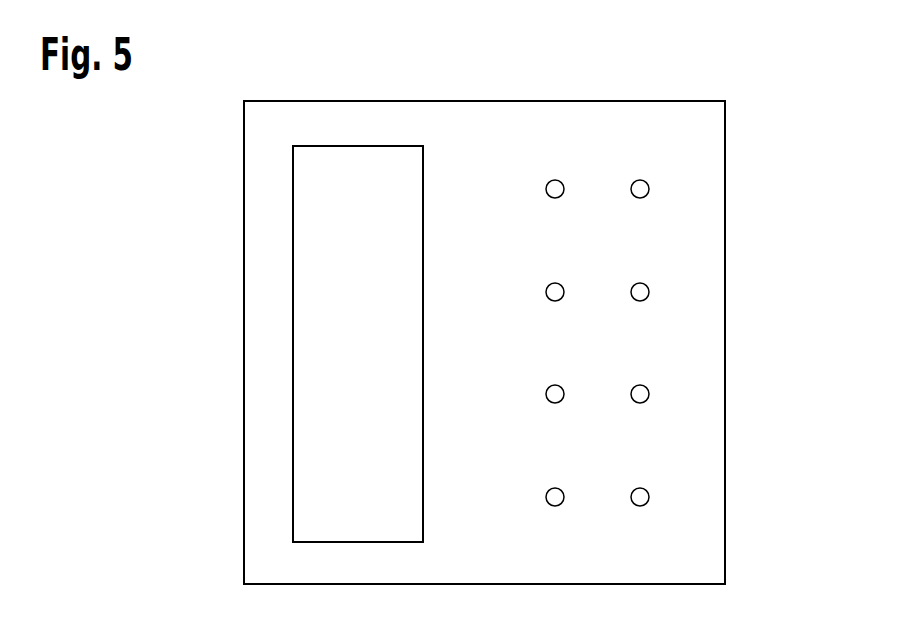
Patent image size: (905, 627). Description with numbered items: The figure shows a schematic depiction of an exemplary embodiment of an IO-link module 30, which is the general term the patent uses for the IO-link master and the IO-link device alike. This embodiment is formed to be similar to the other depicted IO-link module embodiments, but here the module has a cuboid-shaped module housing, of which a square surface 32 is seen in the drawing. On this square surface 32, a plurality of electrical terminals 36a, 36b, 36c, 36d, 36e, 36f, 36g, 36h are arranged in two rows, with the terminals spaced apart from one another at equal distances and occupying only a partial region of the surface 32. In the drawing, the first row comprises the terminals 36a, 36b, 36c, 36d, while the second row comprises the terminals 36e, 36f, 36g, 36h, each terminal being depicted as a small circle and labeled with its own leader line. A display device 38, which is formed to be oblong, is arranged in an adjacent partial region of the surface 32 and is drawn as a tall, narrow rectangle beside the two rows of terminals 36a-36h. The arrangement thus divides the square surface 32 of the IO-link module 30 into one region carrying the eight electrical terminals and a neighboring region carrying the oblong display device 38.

The IO-link module 30 is at (153, 155).
The square surface 32 is at (663, 536).
The electrical terminal 36a is at (558, 181).
The electrical terminal 36b is at (558, 284).
The electrical terminal 36c is at (558, 386).
The electrical terminal 36d is at (558, 489).
The electrical terminal 36e is at (643, 181).
The electrical terminal 36f is at (643, 284).
The electrical terminal 36g is at (643, 386).
The electrical terminal 36h is at (643, 489).
The display device 38 is at (310, 203).